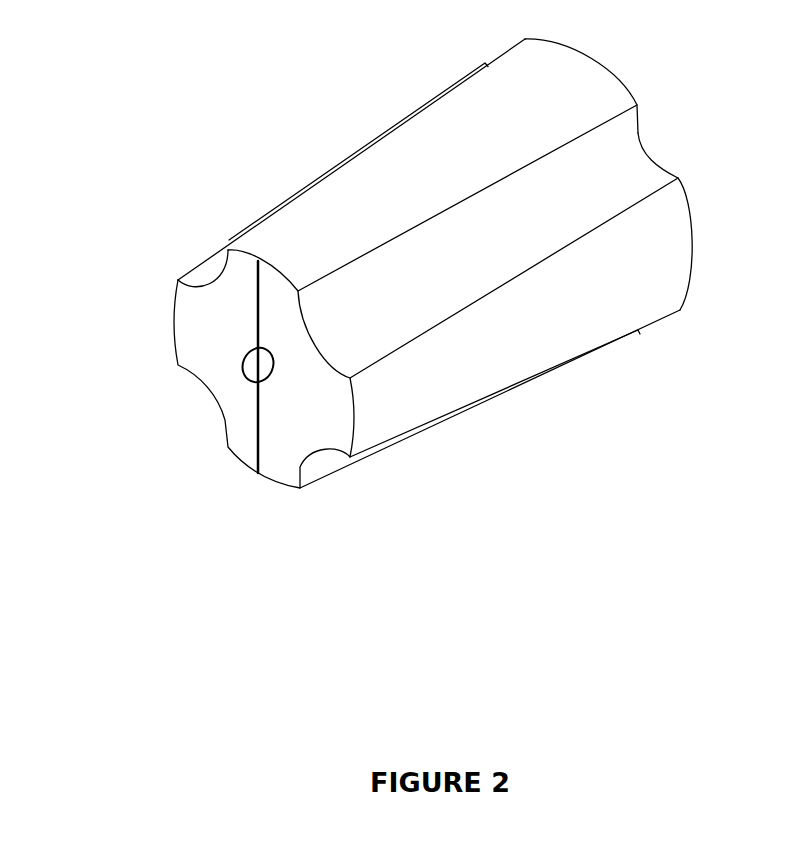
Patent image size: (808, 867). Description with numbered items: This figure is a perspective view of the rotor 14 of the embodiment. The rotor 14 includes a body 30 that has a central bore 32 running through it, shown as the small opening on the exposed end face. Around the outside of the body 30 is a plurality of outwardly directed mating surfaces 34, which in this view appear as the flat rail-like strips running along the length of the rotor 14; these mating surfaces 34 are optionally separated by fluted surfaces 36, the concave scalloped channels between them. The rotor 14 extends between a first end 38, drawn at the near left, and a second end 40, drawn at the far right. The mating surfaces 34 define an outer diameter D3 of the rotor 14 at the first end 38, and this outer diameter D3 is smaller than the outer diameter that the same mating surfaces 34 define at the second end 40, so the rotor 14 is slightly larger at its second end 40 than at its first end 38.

The rotor 14 is at (236, 96).
The body 30 is at (207, 333).
The central bore 32 is at (243, 362).
The mating surfaces 34 is at (410, 147).
The fluted surfaces 36 is at (528, 212).
The first end 38 is at (162, 271).
The second end 40 is at (704, 318).
The outer diameter D3 is at (257, 414).